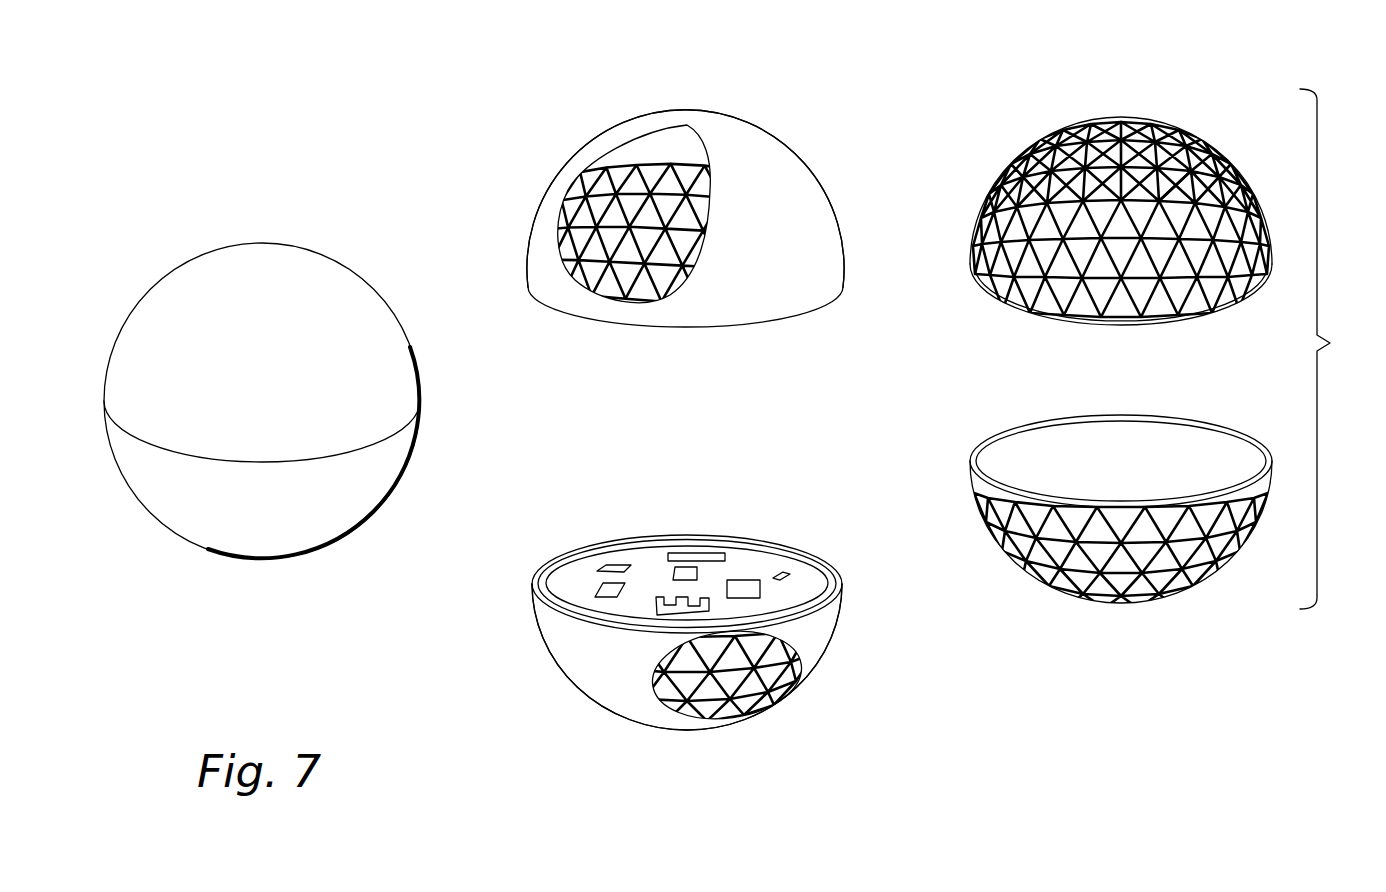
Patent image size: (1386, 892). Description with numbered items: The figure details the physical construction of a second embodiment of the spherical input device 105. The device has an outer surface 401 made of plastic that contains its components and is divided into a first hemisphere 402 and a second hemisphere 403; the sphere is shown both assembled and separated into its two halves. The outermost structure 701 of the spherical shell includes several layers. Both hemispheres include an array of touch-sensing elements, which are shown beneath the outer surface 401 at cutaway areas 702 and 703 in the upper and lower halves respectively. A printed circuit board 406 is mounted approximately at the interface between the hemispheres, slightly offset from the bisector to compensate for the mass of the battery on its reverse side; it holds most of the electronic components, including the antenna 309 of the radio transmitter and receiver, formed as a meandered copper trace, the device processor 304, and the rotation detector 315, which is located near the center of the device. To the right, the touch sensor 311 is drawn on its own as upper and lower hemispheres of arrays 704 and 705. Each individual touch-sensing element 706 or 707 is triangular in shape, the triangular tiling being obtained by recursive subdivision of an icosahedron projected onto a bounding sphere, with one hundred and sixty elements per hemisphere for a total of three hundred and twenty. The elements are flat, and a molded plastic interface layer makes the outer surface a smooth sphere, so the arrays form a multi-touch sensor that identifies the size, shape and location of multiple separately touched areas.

The input device 105 is at (165, 247).
The outer surface 401 is at (318, 243).
The first hemisphere 402 is at (792, 120).
The second hemisphere 403 is at (672, 760).
The cutaway area 702 is at (593, 167).
The cutaway area 703 is at (768, 683).
The antenna 309 is at (670, 598).
The rotation detector 315 is at (690, 569).
The device processor 304 is at (747, 587).
The outermost structure 701 is at (830, 566).
The printed circuit board 406 is at (803, 590).
The upper hemisphere array 704 is at (1036, 119).
The lower hemisphere array 705 is at (1092, 616).
The touch-sensing element 706 is at (1184, 172).
The touch-sensing element 707 is at (1207, 183).
The touch sensor 311 is at (1343, 349).